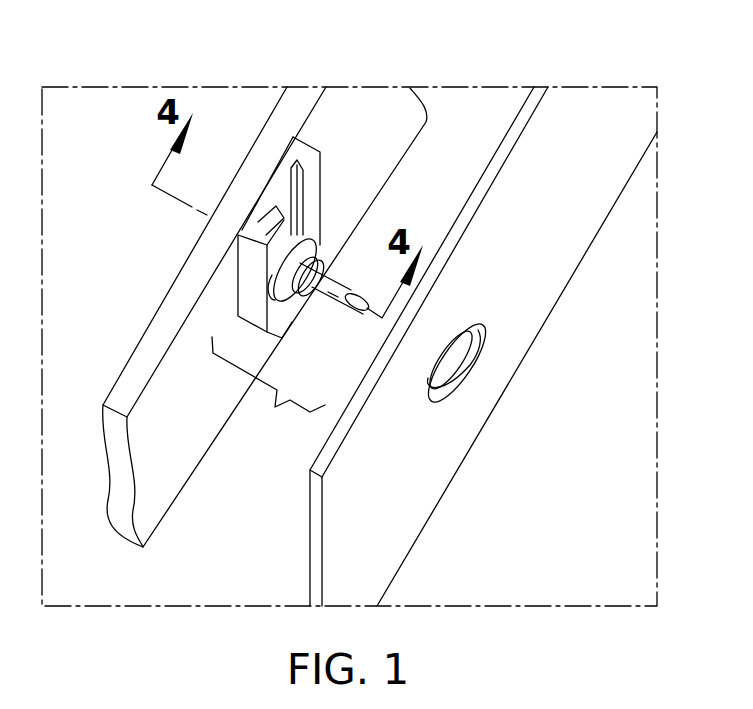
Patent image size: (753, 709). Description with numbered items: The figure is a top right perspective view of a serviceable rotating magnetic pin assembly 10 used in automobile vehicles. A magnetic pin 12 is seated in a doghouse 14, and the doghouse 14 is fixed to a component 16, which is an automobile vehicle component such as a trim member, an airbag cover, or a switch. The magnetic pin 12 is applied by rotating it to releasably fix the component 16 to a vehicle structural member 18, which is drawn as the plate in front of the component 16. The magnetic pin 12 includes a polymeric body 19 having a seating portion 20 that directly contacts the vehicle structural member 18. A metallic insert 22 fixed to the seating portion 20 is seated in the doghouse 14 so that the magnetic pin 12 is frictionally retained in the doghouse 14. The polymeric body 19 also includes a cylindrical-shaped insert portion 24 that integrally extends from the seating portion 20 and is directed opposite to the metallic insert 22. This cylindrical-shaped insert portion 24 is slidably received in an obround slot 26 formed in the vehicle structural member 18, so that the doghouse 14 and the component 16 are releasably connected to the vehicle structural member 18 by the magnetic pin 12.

The serviceable rotating magnetic pin assembly 10 is at (434, 74).
The magnetic pin 12 is at (311, 224).
The doghouse 14 is at (311, 197).
The component 16 is at (183, 297).
The vehicle structural member 18 is at (483, 330).
The polymeric body 19 is at (268, 383).
The seating portion 20 is at (308, 240).
The metallic insert 22 is at (300, 212).
The cylindrical-shaped insert portion 24 is at (338, 307).
The obround slot 26 is at (450, 356).